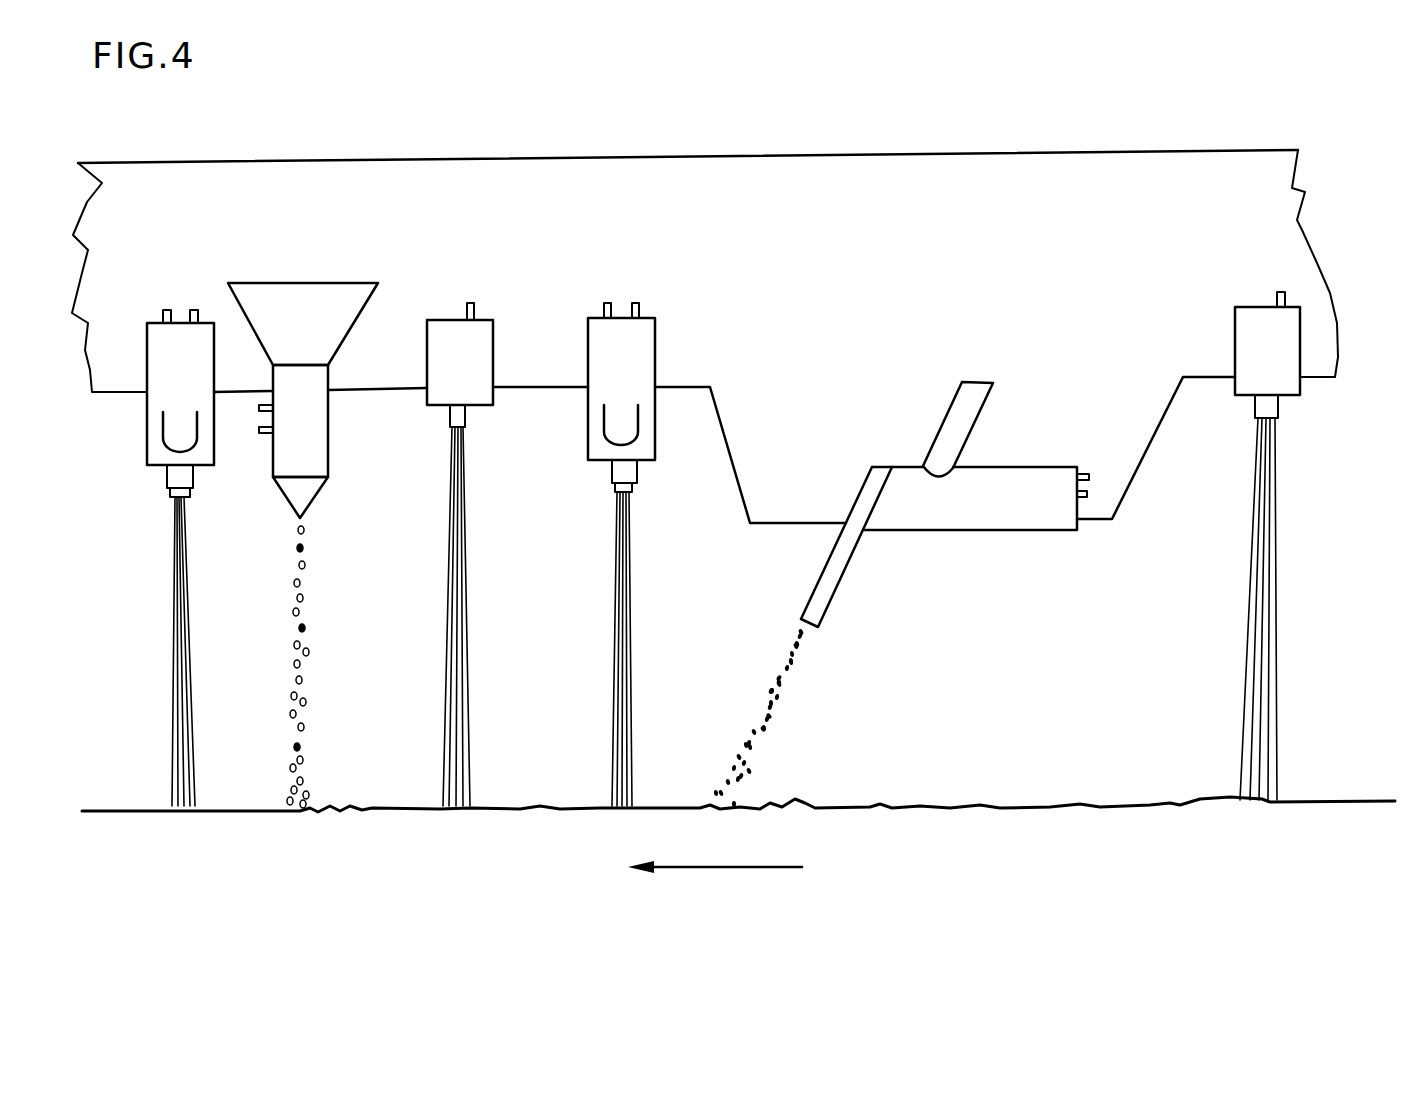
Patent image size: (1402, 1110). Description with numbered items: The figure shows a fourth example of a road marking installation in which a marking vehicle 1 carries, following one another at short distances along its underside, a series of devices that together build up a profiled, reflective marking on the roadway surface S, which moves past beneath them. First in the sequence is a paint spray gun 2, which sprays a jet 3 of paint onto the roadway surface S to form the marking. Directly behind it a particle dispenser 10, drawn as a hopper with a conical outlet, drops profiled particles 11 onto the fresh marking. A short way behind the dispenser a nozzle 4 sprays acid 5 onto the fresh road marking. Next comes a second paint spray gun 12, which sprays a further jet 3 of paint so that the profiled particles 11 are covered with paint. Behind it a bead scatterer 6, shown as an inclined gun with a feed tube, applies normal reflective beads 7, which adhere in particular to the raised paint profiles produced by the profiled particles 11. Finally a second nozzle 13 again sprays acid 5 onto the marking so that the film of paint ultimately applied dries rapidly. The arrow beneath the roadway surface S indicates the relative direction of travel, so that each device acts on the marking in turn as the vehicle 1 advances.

The marking vehicle 1 is at (302, 188).
The paint spray gun 2 is at (158, 432).
The jet of paint 3 is at (186, 645).
The nozzle 4 is at (443, 355).
The acid 5 is at (460, 682).
The bead scatterer 6 is at (995, 517).
The reflective beads 7 is at (768, 692).
The particle dispenser 10 is at (290, 313).
The profiled particles 11 is at (305, 700).
The second paint spray gun 12 is at (604, 382).
The second nozzle 13 is at (1253, 330).
The roadway surface S is at (404, 813).